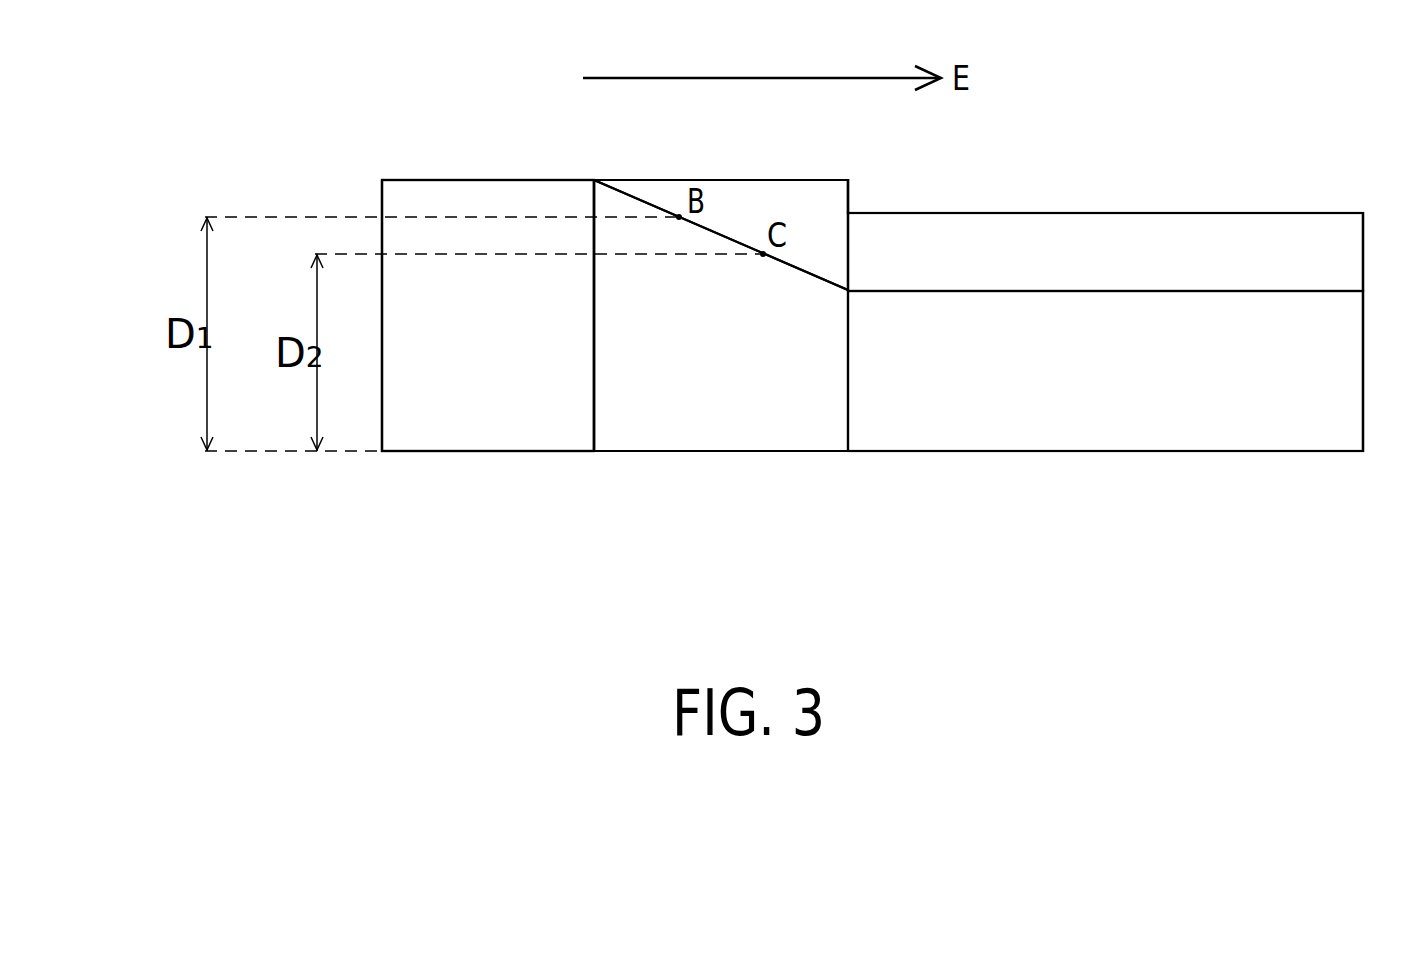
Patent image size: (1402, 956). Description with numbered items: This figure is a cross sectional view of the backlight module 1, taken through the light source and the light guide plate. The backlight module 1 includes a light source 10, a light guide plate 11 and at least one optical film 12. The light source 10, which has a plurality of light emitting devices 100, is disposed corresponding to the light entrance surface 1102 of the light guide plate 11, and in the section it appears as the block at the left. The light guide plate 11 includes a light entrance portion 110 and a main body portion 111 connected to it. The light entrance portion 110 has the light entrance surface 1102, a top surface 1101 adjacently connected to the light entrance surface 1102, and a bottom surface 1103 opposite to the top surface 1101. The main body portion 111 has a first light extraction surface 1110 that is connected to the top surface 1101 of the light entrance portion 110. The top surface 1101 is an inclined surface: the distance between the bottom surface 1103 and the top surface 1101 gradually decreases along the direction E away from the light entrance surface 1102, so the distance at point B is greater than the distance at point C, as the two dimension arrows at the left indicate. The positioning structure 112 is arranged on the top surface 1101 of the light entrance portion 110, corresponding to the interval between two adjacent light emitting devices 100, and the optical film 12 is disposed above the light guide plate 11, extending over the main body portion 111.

The backlight module 1 is at (1400, 70).
The light emitting devices 100 is at (485, 433).
The light source 10 is at (488, 372).
The light guide plate 11 is at (1205, 557).
The light entrance portion 110 is at (840, 433).
The top surface 1101 is at (816, 276).
The light entrance surface 1102 is at (596, 384).
The bottom surface 1103 is at (755, 454).
The main body portion 111 is at (1037, 432).
The first light extraction surface 1110 is at (1153, 293).
The positioning structure 112 is at (745, 187).
The optical film 12 is at (1213, 225).